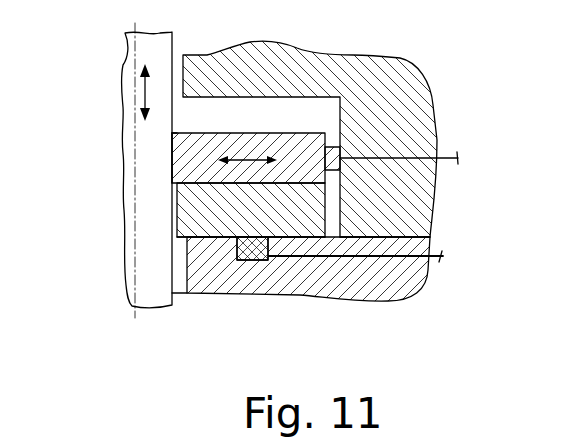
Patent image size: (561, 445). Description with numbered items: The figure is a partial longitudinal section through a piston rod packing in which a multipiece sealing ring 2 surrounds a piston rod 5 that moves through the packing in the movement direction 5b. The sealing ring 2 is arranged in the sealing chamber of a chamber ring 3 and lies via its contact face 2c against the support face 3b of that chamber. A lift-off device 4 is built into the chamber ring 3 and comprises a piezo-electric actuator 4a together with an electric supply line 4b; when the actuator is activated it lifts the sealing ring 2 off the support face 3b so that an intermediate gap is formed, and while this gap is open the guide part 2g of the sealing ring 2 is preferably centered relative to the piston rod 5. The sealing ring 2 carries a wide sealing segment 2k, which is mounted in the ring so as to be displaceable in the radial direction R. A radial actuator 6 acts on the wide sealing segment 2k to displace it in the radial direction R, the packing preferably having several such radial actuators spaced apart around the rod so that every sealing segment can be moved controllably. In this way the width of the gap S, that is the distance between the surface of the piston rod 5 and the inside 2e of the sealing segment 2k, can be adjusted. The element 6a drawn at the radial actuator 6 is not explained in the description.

The sealing ring 2 is at (200, 188).
The wide sealing segment 2k is at (192, 152).
The inside 2e is at (172, 163).
The contact face 2c is at (212, 239).
The guide part 2g is at (305, 238).
The chamber ring 3 is at (345, 196).
The support face 3b is at (336, 238).
The lift-off device 4 is at (272, 304).
The piezo-electric actuator 4a is at (247, 258).
The electric supply line 4b is at (434, 265).
The piston rod 5 is at (106, 170).
The movement direction 5b is at (144, 89).
The radial actuator 6 is at (328, 147).
The spring axis 6a is at (447, 157).
The gap S is at (172, 133).
The radial direction R is at (245, 152).